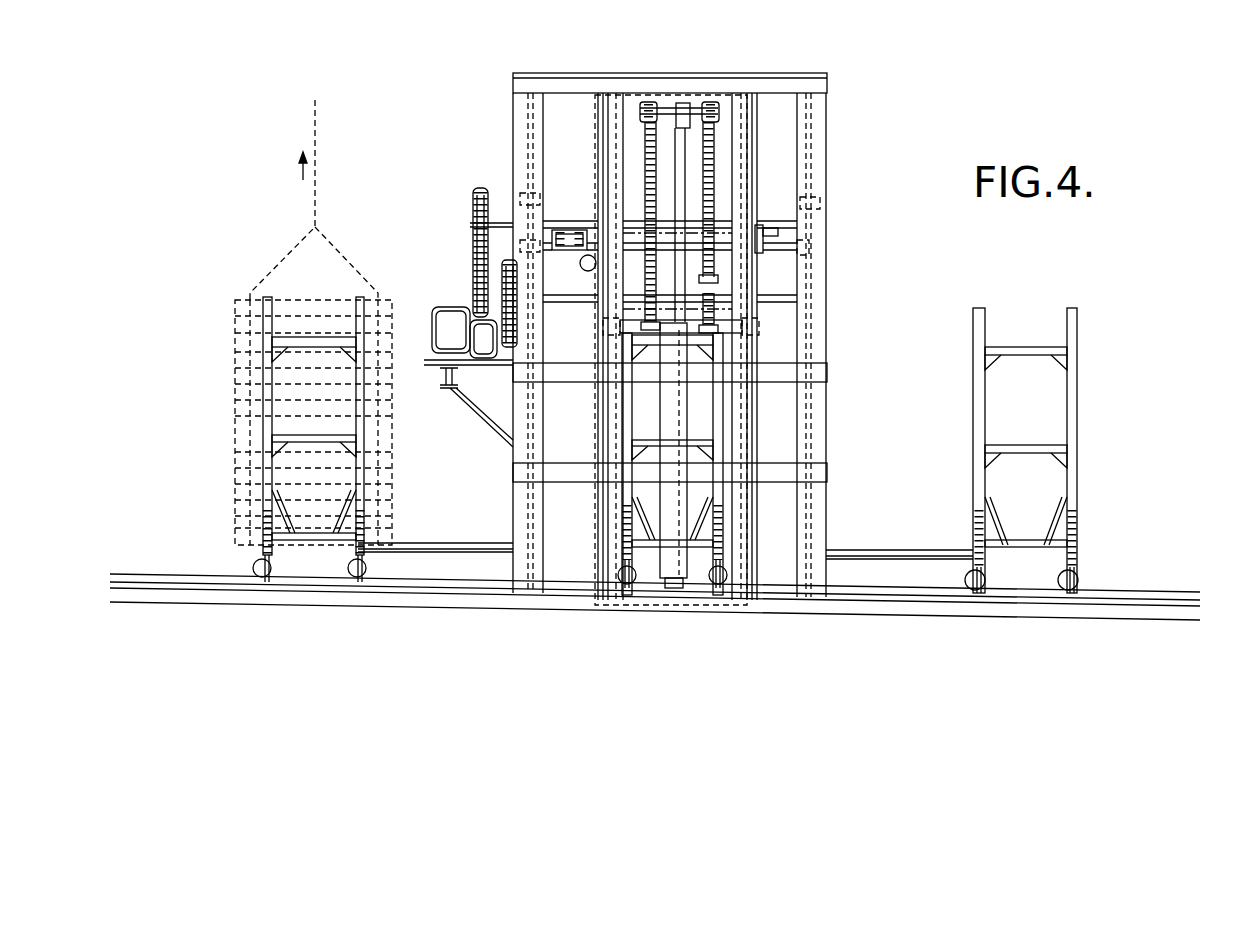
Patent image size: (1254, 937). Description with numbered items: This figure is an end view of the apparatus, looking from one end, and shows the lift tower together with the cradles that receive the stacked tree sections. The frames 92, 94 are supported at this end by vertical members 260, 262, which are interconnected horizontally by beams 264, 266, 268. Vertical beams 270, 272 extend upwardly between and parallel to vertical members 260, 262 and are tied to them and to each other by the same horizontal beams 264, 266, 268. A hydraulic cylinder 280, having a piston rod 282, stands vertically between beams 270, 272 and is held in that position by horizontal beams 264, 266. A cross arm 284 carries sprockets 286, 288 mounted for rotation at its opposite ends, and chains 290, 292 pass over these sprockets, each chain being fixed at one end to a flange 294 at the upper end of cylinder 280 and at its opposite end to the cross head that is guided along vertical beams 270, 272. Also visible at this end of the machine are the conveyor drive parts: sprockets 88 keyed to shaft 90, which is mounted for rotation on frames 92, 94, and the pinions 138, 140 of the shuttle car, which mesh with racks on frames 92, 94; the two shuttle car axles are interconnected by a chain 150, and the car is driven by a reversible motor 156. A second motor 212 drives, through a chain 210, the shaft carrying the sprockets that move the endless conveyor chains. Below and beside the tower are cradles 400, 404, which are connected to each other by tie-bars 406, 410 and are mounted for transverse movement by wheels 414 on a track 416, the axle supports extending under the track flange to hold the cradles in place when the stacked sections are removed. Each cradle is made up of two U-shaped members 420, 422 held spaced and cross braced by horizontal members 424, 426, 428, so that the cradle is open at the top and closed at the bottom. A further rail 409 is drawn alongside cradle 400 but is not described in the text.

The sprockets 88 is at (476, 250).
The shaft 90 is at (472, 223).
The frame 92 is at (522, 194).
The frame 94 is at (813, 201).
The pinion 138 is at (518, 245).
The pinion 140 is at (812, 249).
The chain 150 is at (558, 230).
The motor 156 is at (585, 269).
The chain 210 is at (518, 318).
The motor 212 is at (483, 354).
The vertical member 260 is at (508, 343).
The vertical member 262 is at (841, 345).
The horizontal beam 264 is at (822, 476).
The horizontal beam 266 is at (822, 372).
The horizontal beam 268 is at (780, 83).
The vertical beam 270 is at (608, 158).
The vertical beam 272 is at (748, 157).
The hydraulic cylinder 280 is at (664, 574).
The piston rod 282 is at (686, 128).
The cross arm 284 is at (667, 107).
The sprocket 286 is at (641, 104).
The sprocket 288 is at (716, 104).
The chain 290 is at (645, 180).
The chain 292 is at (713, 185).
The flange 294 is at (742, 328).
The cradle 400 is at (312, 552).
The cradle 404 is at (697, 548).
The tie-bar 406 is at (1028, 469).
The left feed rail 409 is at (445, 544).
The tie-bar 410 is at (886, 551).
The wheels 414 is at (1078, 584).
The track 416 is at (1159, 594).
The U-shaped member 420 is at (972, 311).
The U-shaped member 422 is at (1079, 313).
The horizontal member 424 is at (1068, 545).
The horizontal member 426 is at (1079, 450).
The horizontal member 428 is at (1078, 352).